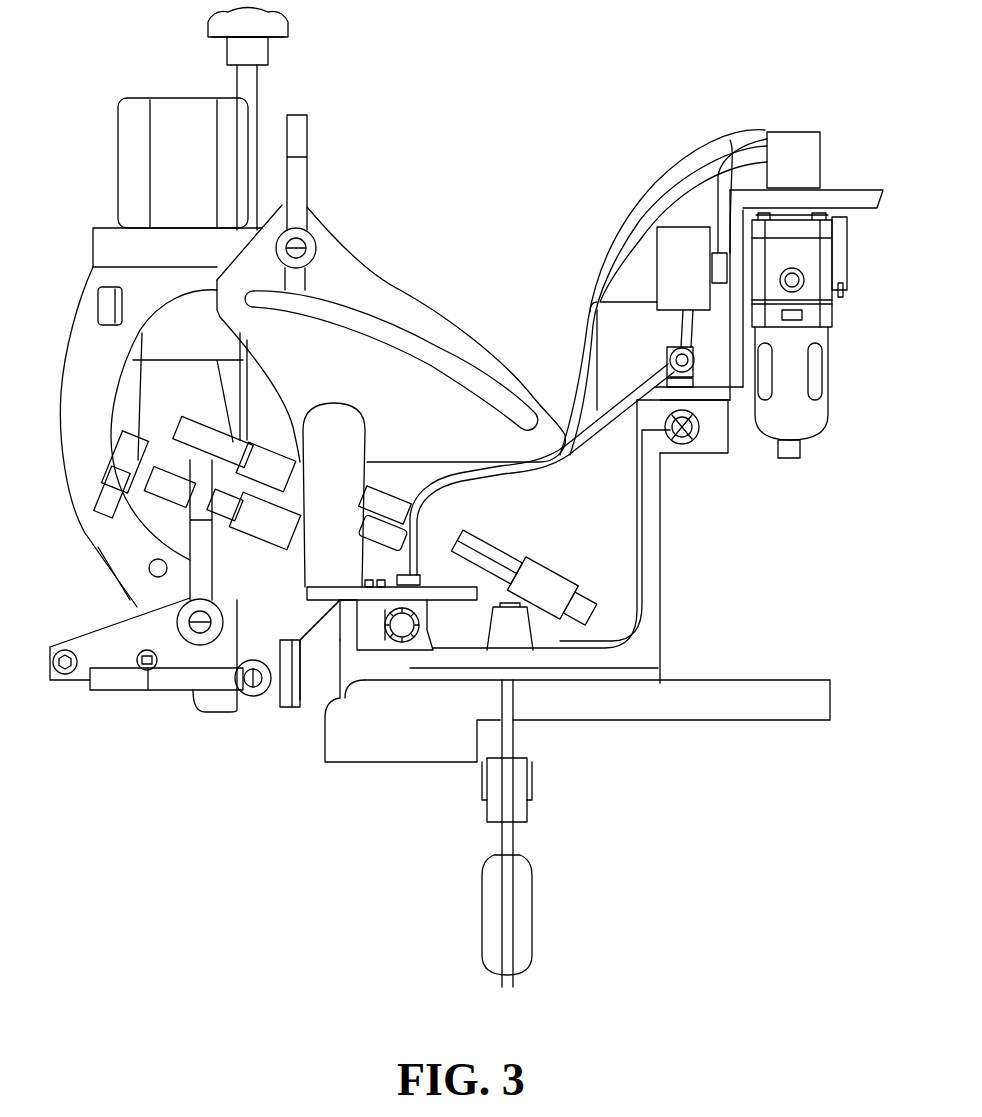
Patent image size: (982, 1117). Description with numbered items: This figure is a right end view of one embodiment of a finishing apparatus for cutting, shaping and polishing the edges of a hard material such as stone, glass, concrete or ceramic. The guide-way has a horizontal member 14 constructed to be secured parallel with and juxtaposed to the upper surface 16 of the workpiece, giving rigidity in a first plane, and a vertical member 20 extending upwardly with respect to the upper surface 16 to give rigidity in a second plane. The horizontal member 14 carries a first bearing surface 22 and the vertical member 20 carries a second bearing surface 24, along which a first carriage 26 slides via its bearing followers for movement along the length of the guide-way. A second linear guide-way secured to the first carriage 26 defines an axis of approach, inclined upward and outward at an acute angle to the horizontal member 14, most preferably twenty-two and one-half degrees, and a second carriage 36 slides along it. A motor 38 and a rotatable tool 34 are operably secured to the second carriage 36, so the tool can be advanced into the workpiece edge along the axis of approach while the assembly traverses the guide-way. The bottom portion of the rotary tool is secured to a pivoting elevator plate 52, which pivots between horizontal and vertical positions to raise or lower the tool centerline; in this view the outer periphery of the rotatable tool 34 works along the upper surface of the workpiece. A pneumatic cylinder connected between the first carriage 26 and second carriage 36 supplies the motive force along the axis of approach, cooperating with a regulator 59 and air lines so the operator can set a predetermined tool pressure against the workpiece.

The horizontal member 14 is at (540, 657).
The upper surface 16 is at (713, 700).
The vertical member 20 is at (650, 555).
The first bearing surface 22 is at (400, 645).
The second bearing surface 24 is at (680, 423).
The first carriage 26 is at (603, 488).
The rotatable tool 34 is at (318, 663).
The second carriage 36 is at (138, 292).
The motor 38 is at (200, 170).
The pivoting elevator plate 52 is at (120, 642).
The regulator 59 is at (795, 255).